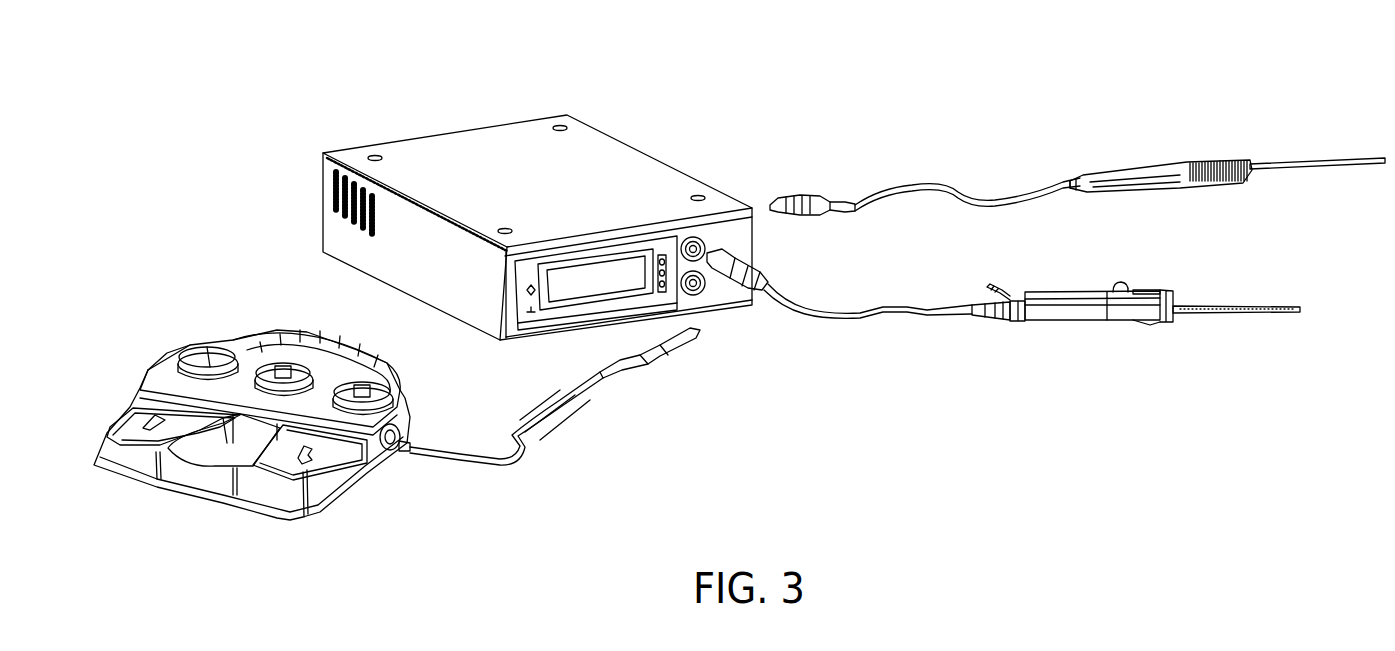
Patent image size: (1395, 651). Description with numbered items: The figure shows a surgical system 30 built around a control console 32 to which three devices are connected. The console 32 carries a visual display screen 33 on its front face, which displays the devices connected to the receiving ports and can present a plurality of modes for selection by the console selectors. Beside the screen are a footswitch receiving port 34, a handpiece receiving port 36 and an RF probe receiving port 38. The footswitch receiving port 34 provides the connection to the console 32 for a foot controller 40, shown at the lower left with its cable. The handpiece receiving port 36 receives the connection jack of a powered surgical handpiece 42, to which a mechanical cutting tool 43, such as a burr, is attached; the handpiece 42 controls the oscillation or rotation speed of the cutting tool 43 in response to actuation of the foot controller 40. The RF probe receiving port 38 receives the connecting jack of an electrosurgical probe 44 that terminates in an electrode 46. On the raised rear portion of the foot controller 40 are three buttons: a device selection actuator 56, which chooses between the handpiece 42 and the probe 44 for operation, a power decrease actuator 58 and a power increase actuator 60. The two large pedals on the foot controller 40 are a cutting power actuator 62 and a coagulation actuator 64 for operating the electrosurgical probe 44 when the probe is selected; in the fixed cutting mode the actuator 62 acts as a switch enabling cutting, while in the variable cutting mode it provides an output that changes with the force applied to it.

The surgical system 30 is at (686, 85).
The console 32 is at (495, 145).
The visual display screen 33 is at (573, 270).
The footswitch receiving port 34 is at (700, 290).
The handpiece receiving port 36 is at (718, 250).
The RF probe receiving port 38 is at (698, 240).
The foot controller 40 is at (168, 372).
The powered surgical handpiece 42 is at (1070, 310).
The mechanical cutting tool 43 is at (1270, 305).
The electrosurgical probe 44 is at (1140, 170).
The electrode 46 is at (1382, 158).
The device selection actuator 56 is at (272, 340).
The power decrease actuator 58 is at (195, 348).
The power increase actuator 60 is at (385, 385).
The cutting power actuator 62 is at (112, 392).
The coagulation actuator 64 is at (395, 440).